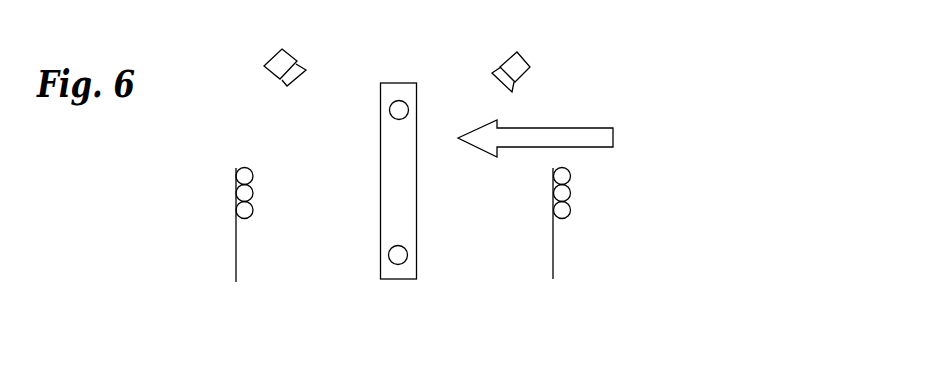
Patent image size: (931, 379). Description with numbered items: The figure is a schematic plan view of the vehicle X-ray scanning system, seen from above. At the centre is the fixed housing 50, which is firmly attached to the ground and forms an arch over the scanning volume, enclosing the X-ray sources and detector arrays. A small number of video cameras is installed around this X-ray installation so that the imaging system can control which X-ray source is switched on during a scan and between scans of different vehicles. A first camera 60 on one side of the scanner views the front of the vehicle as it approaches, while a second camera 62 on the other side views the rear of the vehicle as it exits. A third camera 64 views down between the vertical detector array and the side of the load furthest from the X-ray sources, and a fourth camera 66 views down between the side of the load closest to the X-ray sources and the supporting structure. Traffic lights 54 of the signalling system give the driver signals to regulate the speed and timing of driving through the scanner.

The fixed housing 50 is at (395, 182).
The traffic lights 54 is at (236, 210).
The first camera 60 is at (280, 63).
The second camera 62 is at (527, 62).
The third camera 64 is at (399, 110).
The fourth camera 66 is at (398, 255).